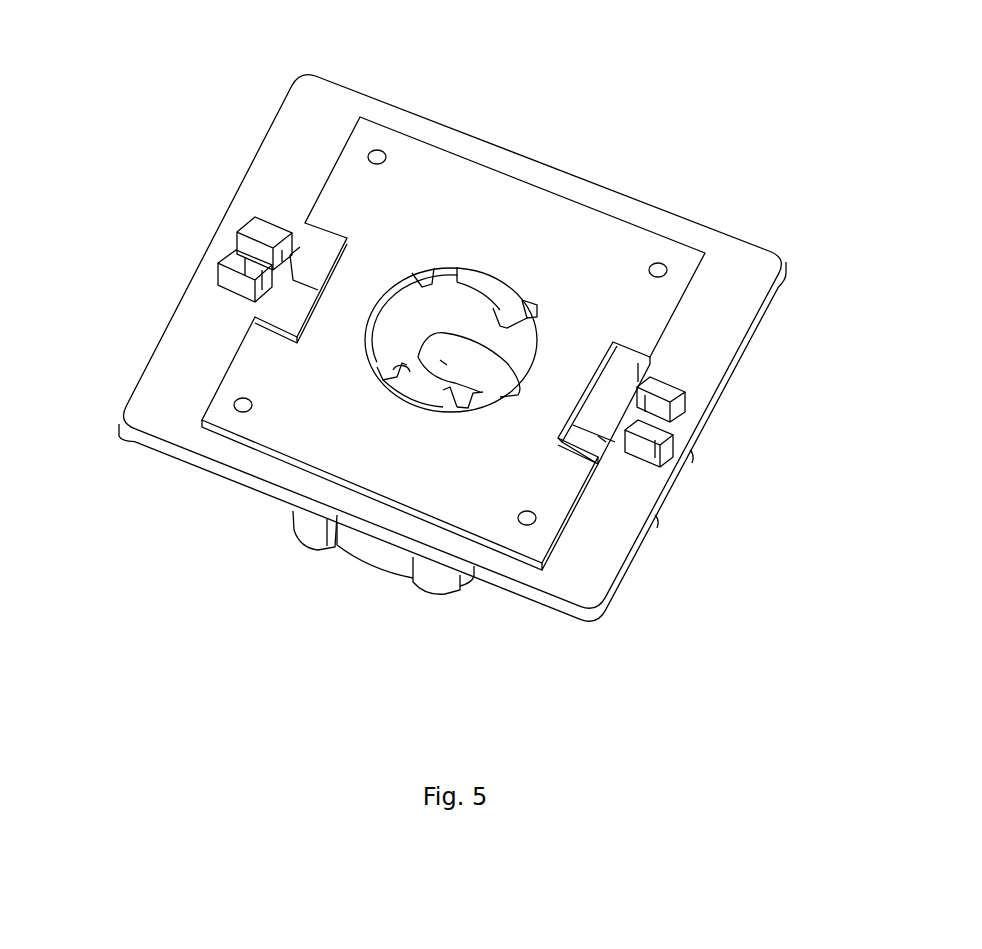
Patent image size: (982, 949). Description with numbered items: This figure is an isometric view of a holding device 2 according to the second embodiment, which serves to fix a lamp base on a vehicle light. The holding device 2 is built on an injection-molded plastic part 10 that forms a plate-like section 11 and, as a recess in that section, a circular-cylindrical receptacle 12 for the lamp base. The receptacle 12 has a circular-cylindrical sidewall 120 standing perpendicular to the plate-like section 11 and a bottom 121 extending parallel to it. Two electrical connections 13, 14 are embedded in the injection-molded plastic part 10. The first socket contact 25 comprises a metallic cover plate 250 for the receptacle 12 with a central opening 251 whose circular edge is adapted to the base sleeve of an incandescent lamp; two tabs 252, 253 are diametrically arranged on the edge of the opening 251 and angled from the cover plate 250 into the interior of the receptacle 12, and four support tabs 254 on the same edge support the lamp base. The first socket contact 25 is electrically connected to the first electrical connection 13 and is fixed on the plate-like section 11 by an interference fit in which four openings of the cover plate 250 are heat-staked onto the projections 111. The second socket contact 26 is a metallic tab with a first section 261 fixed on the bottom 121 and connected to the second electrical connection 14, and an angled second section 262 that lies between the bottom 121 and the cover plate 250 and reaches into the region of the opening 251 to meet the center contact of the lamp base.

The holding device 2 is at (262, 75).
The injection-molded plastic part 10 is at (160, 466).
The plate-like section 11 is at (195, 330).
The projections 111 is at (377, 149).
The receptacle 12 is at (313, 252).
The circular-cylindrical sidewall 120 is at (313, 532).
The bottom 121 is at (372, 563).
The first electrical connection 13 is at (260, 228).
The second electrical connection 14 is at (670, 430).
The first socket contact 25 is at (549, 218).
The cover plate 250 is at (472, 180).
The central opening 251 is at (392, 337).
The tab 252 is at (500, 313).
The tab 253 is at (423, 407).
The support tabs 254 is at (425, 272).
The second socket contact 26 is at (497, 368).
The first section 261 is at (603, 440).
The second section 262 is at (443, 362).